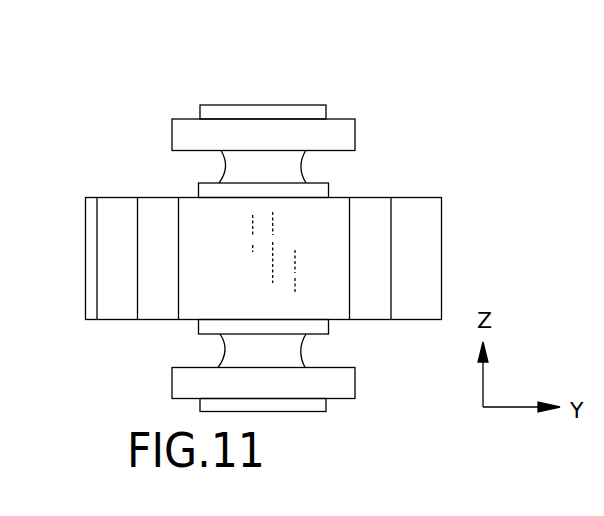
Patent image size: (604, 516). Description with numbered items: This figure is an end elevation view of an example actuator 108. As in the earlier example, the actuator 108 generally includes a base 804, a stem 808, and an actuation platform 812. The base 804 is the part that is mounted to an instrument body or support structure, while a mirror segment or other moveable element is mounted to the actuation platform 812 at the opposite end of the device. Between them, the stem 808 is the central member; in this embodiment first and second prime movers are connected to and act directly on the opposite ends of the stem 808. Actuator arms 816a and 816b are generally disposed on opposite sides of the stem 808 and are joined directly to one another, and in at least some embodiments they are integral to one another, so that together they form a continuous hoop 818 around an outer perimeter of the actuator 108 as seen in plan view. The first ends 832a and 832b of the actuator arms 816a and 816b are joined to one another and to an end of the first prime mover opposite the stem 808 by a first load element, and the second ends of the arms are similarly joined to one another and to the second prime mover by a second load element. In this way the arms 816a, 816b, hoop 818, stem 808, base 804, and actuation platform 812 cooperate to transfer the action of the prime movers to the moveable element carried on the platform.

The actuator 108 is at (217, 84).
The actuation platform 812 is at (264, 105).
The continuous hoop 818 is at (410, 205).
The actuator arm 816a is at (437, 235).
The actuator arm 816b is at (115, 290).
The first end of actuator arm 832a is at (322, 225).
The first end of actuator arm 832b is at (197, 213).
The stem 808 is at (332, 320).
The base 804 is at (297, 412).